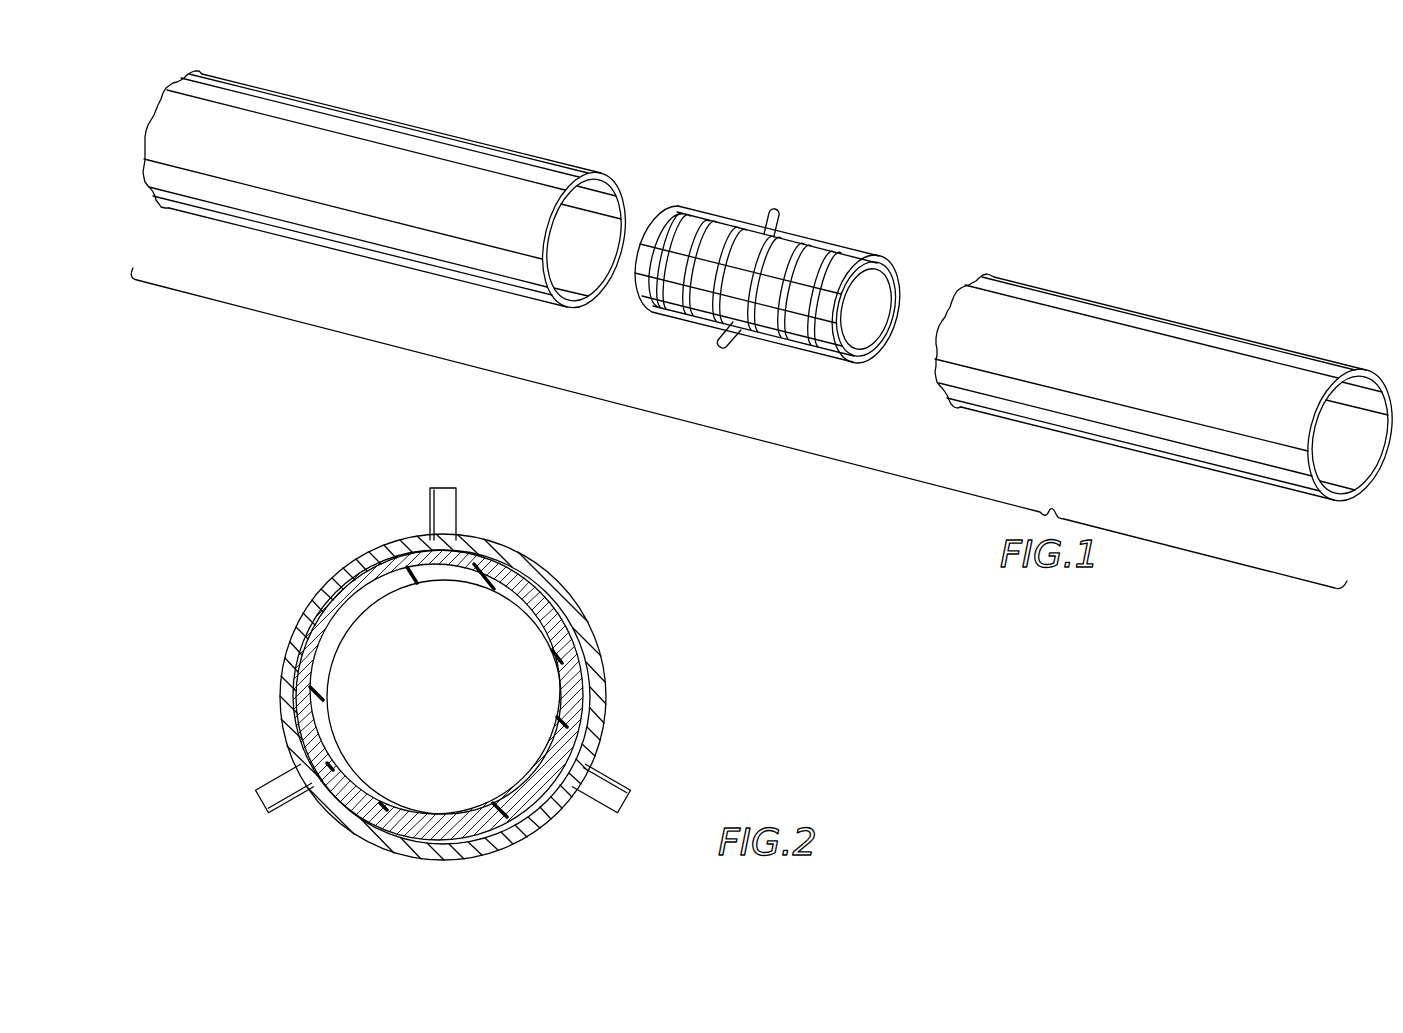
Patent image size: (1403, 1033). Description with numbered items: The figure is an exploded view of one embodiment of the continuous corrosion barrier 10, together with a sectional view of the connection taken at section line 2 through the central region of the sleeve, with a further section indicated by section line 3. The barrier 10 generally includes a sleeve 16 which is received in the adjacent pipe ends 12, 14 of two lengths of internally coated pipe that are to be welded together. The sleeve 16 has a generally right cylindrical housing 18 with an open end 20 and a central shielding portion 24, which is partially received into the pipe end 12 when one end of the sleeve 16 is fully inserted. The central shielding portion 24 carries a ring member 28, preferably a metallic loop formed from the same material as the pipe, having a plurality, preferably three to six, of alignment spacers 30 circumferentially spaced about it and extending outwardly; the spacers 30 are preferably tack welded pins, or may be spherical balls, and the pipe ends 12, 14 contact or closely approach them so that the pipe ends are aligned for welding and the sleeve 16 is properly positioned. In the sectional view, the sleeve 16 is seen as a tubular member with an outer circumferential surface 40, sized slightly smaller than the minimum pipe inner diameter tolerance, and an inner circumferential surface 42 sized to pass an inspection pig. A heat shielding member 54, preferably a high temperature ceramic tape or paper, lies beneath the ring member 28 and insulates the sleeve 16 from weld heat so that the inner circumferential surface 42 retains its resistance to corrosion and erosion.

In FIG. 1, the continuous corrosion barrier 10 is at (699, 128).
In FIG. 1, the pipe end 12 is at (1107, 302).
In FIG. 1, the pipe end 14 is at (450, 137).
In FIG. 1, the sleeve 16 is at (767, 289).
In FIG. 2, the sleeve 16 is at (284, 703).
In FIG. 1, the right cylindrical housing 18 is at (645, 311).
In FIG. 1, the open end 20 is at (893, 278).
In FIG. 1, the central shielding portion 24 is at (790, 220).
In FIG. 1, the ring member 28 is at (752, 343).
In FIG. 2, the ring member 28 is at (592, 628).
In FIG. 1, the alignment spacers 30 is at (762, 212).
In FIG. 2, the alignment spacers 30 is at (460, 497).
In FIG. 2, the outer circumferential surface 40 is at (405, 585).
In FIG. 2, the inner circumferential surface 42 is at (333, 655).
In FIG. 2, the heat shielding member 54 is at (530, 577).
In FIG. 1, the section line 2- 2 is at (742, 169).
In FIG. 1, the section line 3- 3 is at (605, 248).